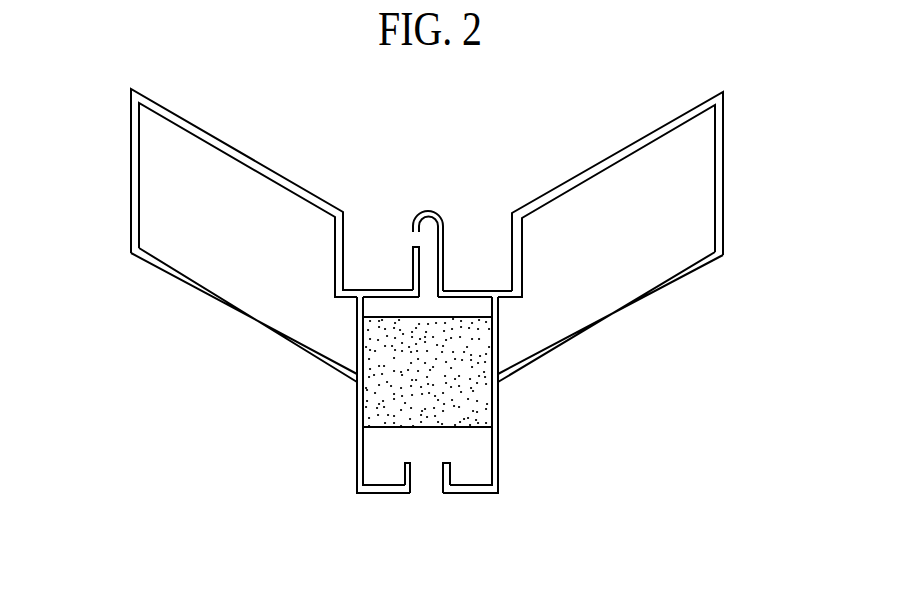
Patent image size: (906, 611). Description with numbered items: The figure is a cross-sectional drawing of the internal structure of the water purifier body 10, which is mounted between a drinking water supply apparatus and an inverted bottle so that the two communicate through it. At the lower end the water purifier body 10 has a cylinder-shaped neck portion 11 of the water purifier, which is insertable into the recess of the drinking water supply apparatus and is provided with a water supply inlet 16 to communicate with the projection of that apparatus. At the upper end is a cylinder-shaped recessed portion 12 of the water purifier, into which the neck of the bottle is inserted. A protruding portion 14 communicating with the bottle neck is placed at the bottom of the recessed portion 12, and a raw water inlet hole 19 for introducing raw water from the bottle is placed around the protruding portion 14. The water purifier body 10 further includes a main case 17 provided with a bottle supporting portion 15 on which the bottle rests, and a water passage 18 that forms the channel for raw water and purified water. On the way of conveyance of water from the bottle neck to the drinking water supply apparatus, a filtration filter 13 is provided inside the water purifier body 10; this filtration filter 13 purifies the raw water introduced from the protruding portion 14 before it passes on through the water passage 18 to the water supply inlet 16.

The water purifier body 10 is at (249, 219).
The neck portion of the water purifier 11 is at (358, 468).
The recessed portion of the water purifier 12 is at (468, 290).
The filtration filter 13 is at (378, 385).
The protruding portion 14 is at (438, 210).
The bottle supporting portion 15 is at (668, 120).
The water supply inlet 16 is at (422, 487).
The main case 17 is at (203, 298).
The water passage 18 is at (463, 201).
The raw water inlet hole 19 is at (415, 238).